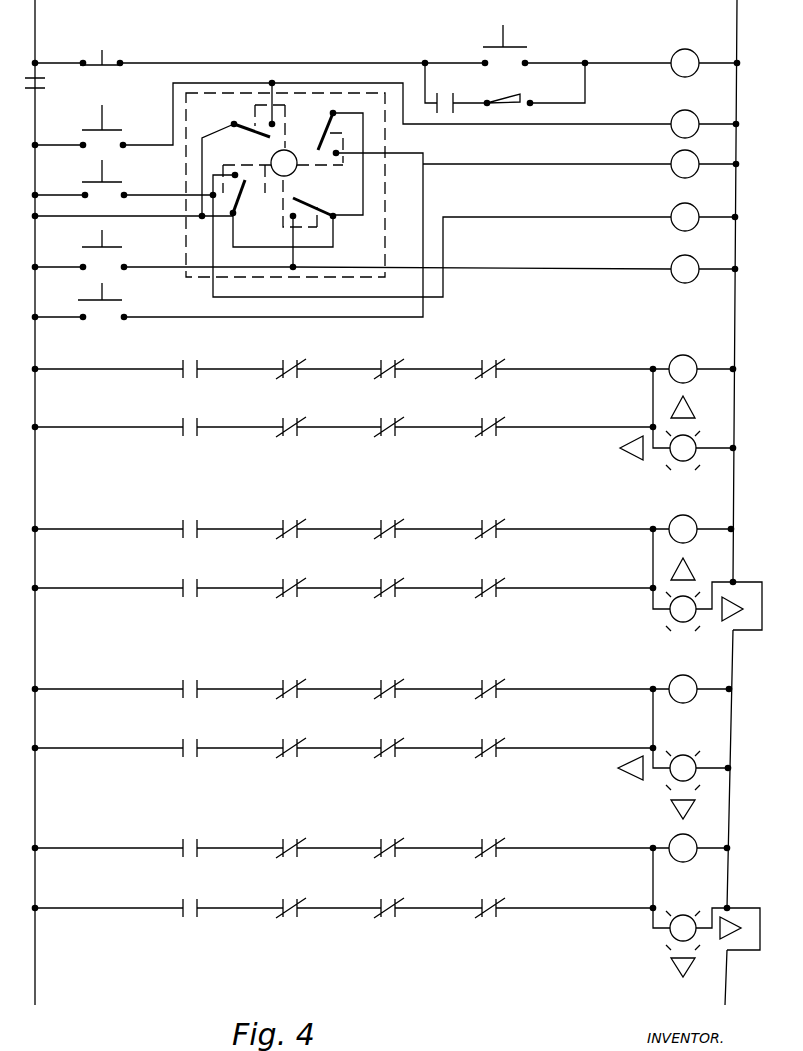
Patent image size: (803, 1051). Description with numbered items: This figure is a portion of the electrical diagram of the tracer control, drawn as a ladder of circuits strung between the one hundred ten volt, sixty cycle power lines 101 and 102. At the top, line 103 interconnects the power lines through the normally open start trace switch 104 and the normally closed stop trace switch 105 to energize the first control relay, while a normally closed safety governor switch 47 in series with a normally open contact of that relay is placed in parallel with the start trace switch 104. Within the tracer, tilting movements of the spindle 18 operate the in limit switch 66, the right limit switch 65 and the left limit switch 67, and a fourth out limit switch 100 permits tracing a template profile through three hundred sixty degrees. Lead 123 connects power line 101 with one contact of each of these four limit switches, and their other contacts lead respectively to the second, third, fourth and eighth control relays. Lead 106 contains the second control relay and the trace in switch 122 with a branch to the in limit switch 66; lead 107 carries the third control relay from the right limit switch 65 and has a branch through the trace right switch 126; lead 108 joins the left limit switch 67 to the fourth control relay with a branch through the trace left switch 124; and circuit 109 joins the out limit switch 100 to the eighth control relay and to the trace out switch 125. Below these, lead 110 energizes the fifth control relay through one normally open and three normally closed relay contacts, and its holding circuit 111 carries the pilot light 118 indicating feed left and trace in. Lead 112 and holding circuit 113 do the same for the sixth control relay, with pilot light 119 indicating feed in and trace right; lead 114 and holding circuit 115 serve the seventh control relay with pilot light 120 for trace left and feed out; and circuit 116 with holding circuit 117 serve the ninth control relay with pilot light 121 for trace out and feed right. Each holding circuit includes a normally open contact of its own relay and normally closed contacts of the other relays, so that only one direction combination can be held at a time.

The spindle 18 is at (284, 163).
The safety governor switch 47 is at (529, 115).
The right limit switch 65 is at (326, 160).
The in limit switch 66 is at (247, 117).
The left limit switch 67 is at (246, 191).
The out limit switch 100 is at (327, 200).
The power line 101 is at (35, 401).
The power line 102 is at (739, 308).
The line 103 is at (292, 63).
The start trace switch 104 is at (527, 47).
The stop trace switch 105 is at (104, 25).
The lead 106 is at (612, 124).
The lead 107 is at (607, 166).
The lead 108 is at (172, 197).
The circuit 109 is at (604, 271).
The lead 110 is at (603, 368).
The holding circuit 111 is at (598, 427).
The lead 112 is at (598, 527).
The holding circuit 113 is at (596, 588).
The lead 114 is at (589, 686).
The holding circuit 115 is at (592, 748).
The circuit 116 is at (584, 848).
The holding circuit 117 is at (577, 908).
The pilot light 118 is at (700, 442).
The pilot light 119 is at (684, 623).
The pilot light 120 is at (700, 760).
The pilot light 121 is at (690, 916).
The trace in switch 122 is at (104, 125).
The lead 123 is at (216, 129).
The trace left switch 124 is at (108, 166).
The trace out switch 125 is at (134, 242).
The trace right switch 126 is at (134, 291).